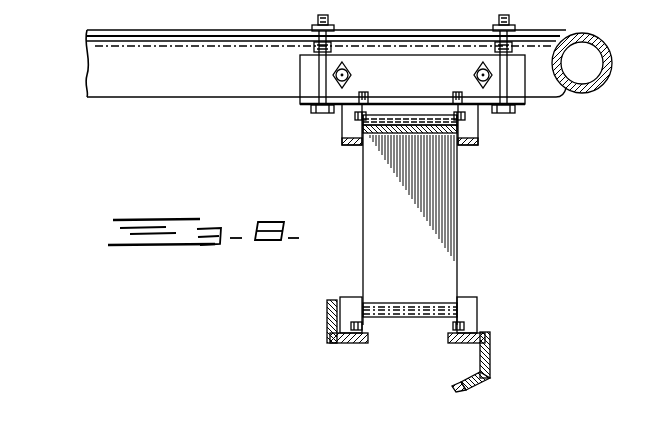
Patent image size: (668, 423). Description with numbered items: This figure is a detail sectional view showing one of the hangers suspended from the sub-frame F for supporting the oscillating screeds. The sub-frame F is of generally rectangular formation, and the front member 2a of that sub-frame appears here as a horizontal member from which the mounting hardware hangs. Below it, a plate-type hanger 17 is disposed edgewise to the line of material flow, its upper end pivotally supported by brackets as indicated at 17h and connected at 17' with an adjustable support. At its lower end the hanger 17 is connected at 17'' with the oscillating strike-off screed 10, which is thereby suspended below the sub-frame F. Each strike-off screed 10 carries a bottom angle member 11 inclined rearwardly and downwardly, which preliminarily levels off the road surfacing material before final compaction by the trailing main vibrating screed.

The sub-frame F is at (209, 80).
The front member 2a is at (613, 79).
The plate-type hanger 17 is at (417, 220).
The pivotal support of hanger upper end 17h is at (340, 129).
The hanger connection with adjustable support 17' is at (429, 146).
The hanger connection with strike-off screed 17'' is at (431, 290).
The oscillating strike-off screed 10 is at (491, 353).
The bottom angle member 11 is at (462, 382).